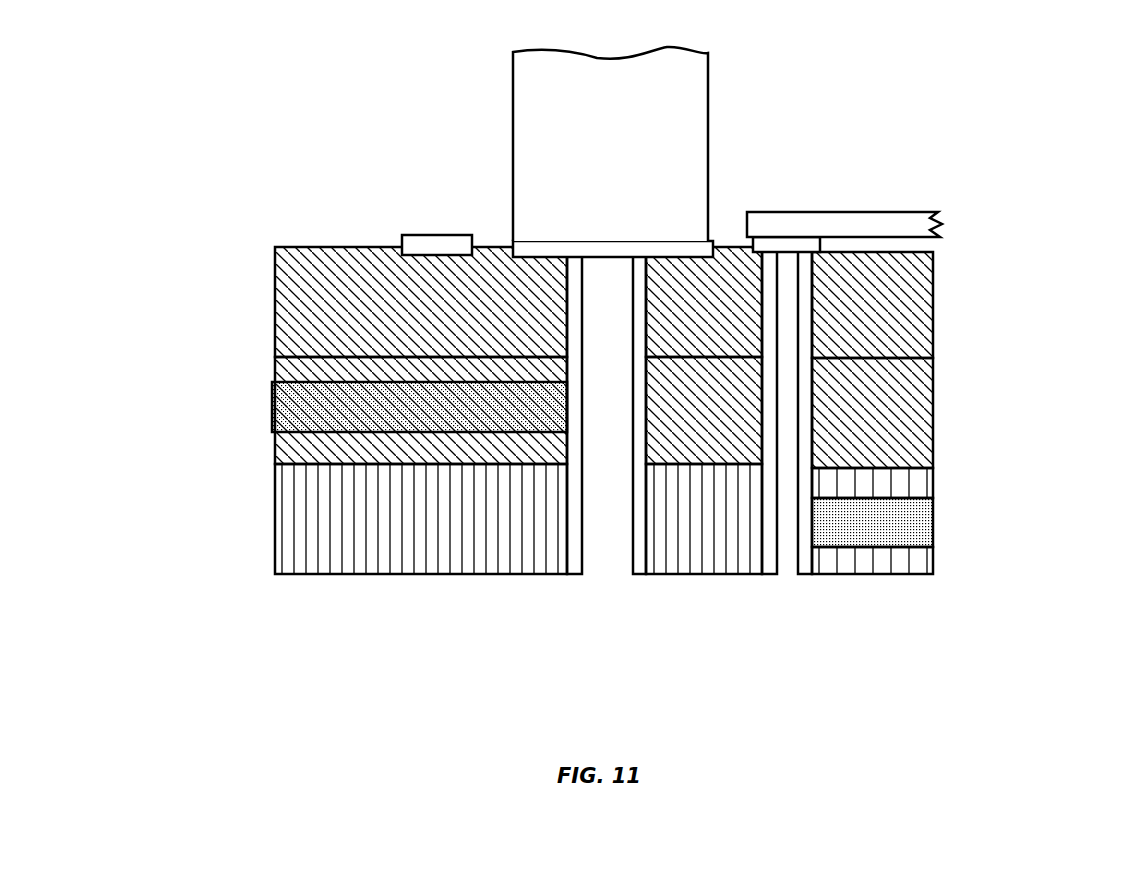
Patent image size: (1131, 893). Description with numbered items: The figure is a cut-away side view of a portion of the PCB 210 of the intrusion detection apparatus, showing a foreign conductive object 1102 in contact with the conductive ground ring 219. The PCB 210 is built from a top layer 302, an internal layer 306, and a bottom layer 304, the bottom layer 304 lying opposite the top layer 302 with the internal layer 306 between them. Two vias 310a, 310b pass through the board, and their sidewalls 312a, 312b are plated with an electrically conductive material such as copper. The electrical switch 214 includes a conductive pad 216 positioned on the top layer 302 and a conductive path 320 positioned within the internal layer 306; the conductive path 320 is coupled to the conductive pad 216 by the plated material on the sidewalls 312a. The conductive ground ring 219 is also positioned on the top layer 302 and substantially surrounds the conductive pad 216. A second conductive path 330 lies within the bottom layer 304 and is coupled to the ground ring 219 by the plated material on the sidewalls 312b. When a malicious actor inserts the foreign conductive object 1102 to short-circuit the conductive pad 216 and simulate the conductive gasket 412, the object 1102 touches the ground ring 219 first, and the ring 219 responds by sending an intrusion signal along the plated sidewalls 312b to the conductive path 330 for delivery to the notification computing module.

The electrical switch 214 is at (325, 90).
The conductive gasket 412 is at (722, 75).
The conductive pad 216 is at (713, 240).
The conductive ground ring 219 is at (455, 235).
The foreign conductive object 1102 is at (873, 210).
The PCB 210 is at (997, 205).
The top layer 302 is at (932, 308).
The internal layer 306 is at (932, 408).
The bottom layer 304 is at (932, 478).
The conductive path 330 is at (932, 525).
The conductive path 320 is at (270, 407).
The sidewall 312a is at (568, 577).
The sidewall 312b is at (764, 577).
The via 310a is at (607, 568).
The via 310b is at (790, 590).